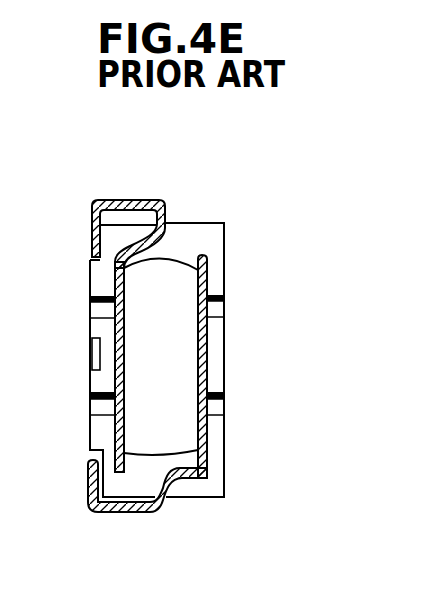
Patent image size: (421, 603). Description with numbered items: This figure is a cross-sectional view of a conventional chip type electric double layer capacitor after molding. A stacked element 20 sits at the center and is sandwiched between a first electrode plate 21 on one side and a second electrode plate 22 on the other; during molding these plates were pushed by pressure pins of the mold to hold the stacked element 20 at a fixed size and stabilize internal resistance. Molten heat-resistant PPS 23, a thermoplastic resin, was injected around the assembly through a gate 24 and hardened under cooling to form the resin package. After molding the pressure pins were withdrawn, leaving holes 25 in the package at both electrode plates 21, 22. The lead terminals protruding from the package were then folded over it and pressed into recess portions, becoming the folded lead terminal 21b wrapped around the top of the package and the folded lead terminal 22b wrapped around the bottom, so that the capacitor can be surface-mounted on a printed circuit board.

The stacked element 20 is at (181, 278).
The first electrode plate 21 is at (116, 458).
The lead terminal 21b is at (132, 199).
The second electrode plate 22 is at (210, 441).
The lead terminal 22b is at (172, 505).
The heat-resistant PPS 23 is at (179, 233).
The gate 24 is at (98, 351).
The holes 25 is at (101, 312).